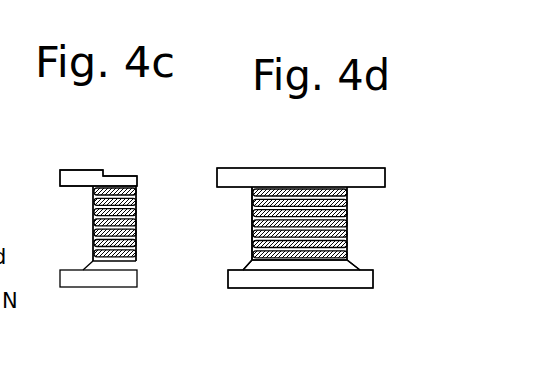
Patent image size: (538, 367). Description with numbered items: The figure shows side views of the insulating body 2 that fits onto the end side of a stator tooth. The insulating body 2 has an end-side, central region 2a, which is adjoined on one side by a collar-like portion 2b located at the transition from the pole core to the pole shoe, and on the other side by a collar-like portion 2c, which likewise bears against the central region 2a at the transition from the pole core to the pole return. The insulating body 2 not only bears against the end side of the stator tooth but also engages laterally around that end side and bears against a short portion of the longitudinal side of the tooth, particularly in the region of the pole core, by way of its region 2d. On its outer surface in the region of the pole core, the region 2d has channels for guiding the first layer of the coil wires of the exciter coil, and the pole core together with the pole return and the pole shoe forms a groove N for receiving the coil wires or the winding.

In FIG. 4c, the insulating body 2 is at (78, 169).
In FIG. 4d, the insulating body 2 is at (290, 175).
In FIG. 4c, the end-side region 2a is at (90, 209).
In FIG. 4d, the end-side region 2a is at (350, 220).
In FIG. 4c, the collar-like portion 2b is at (66, 172).
In FIG. 4d, the collar-like portion 2b is at (347, 283).
In FIG. 4d, the collar-like portion 2c is at (367, 172).
In FIG. 4c, the region 2d is at (94, 226).
In FIG. 4d, the region 2d is at (348, 237).
In FIG. 4d, the groove N is at (242, 227).